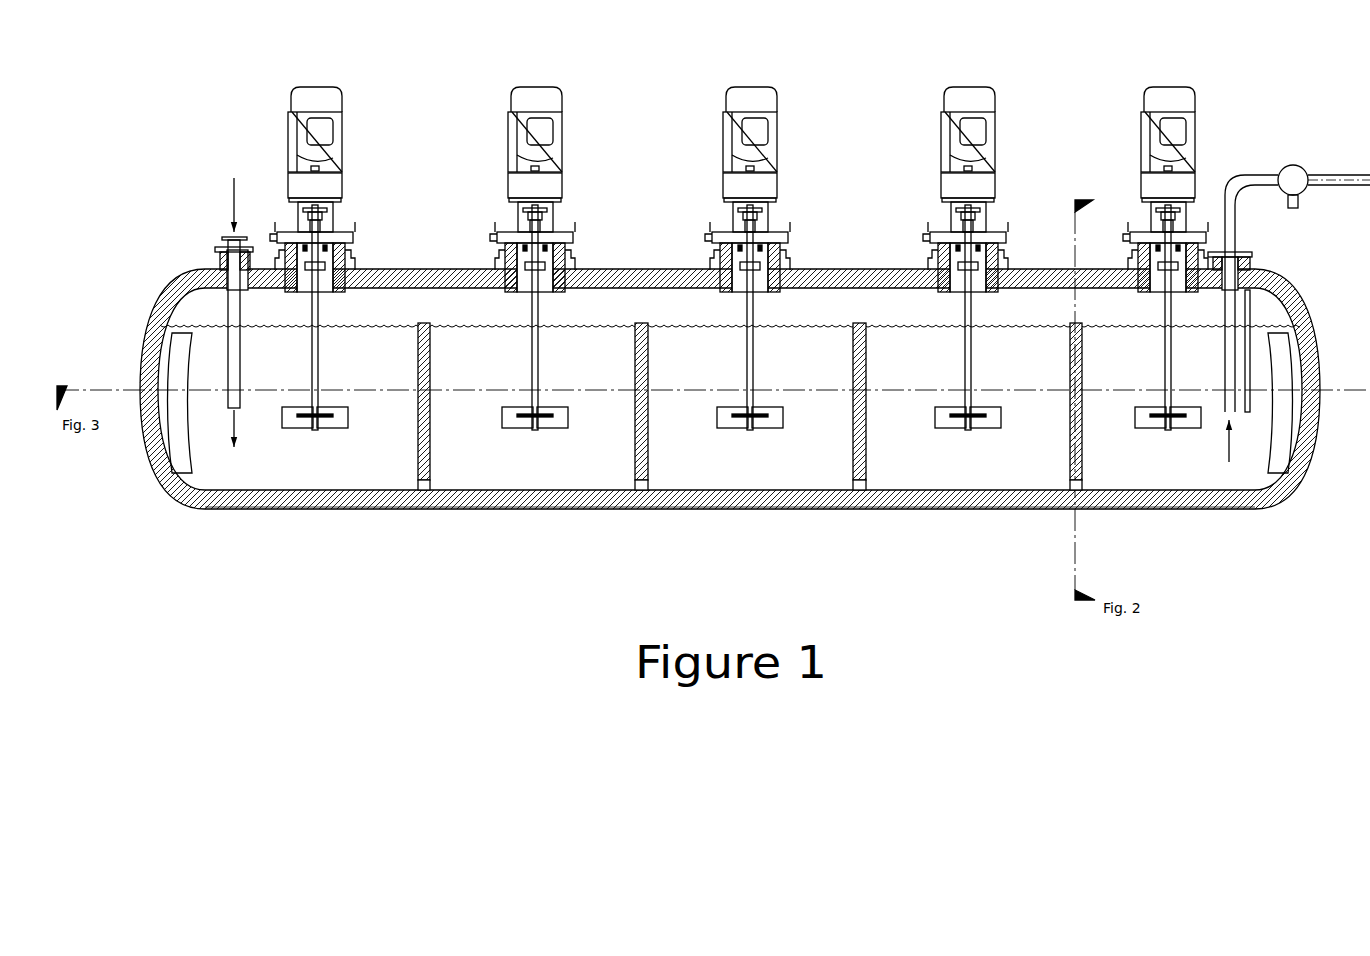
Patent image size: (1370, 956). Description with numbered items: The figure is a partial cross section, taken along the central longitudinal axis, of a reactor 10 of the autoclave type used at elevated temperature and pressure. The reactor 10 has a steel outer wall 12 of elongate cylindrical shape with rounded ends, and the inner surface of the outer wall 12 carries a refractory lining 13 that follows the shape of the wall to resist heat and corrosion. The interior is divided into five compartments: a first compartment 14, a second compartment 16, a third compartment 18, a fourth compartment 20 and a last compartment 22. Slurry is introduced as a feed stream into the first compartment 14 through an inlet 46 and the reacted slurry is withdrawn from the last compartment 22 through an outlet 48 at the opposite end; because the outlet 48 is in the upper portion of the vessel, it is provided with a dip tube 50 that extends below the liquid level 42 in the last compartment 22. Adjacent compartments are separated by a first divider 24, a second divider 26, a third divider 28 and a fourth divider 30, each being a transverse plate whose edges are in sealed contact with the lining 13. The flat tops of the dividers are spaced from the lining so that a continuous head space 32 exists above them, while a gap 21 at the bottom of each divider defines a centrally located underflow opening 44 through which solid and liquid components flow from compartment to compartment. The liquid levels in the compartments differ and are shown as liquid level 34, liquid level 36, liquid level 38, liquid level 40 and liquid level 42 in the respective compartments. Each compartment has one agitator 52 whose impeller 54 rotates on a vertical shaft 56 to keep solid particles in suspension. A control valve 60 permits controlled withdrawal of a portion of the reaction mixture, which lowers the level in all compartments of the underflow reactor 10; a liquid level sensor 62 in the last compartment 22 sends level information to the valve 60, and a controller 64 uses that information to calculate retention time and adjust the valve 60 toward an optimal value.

The reactor 10 is at (530, 588).
The outer wall 12 is at (895, 513).
The refractory lining 13 is at (1183, 498).
The first compartment 14 is at (307, 470).
The second compartment 16 is at (547, 468).
The third compartment 18 is at (750, 470).
The fourth compartment 20 is at (972, 478).
The gap 21 is at (605, 582).
The last compartment 22 is at (1253, 476).
The first divider 24 is at (419, 323).
The second divider 26 is at (635, 324).
The third divider 28 is at (853, 326).
The fourth divider 30 is at (1070, 330).
The head space 32 is at (645, 300).
The liquid level 34 is at (180, 320).
The liquid level 36 is at (500, 330).
The liquid level 38 is at (735, 338).
The liquid level 40 is at (929, 340).
The liquid level 42 is at (1152, 345).
The underflow opening 44 is at (412, 483).
The inlet 46 is at (212, 243).
The outlet 48 is at (1257, 252).
The dip tube 50 is at (1221, 418).
The agitator 52 is at (345, 105).
The impeller 54 is at (319, 430).
The vertical shaft 56 is at (321, 343).
The control valve 60 is at (1296, 166).
The liquid level sensor 62 is at (1256, 306).
The controller 64 is at (1303, 203).